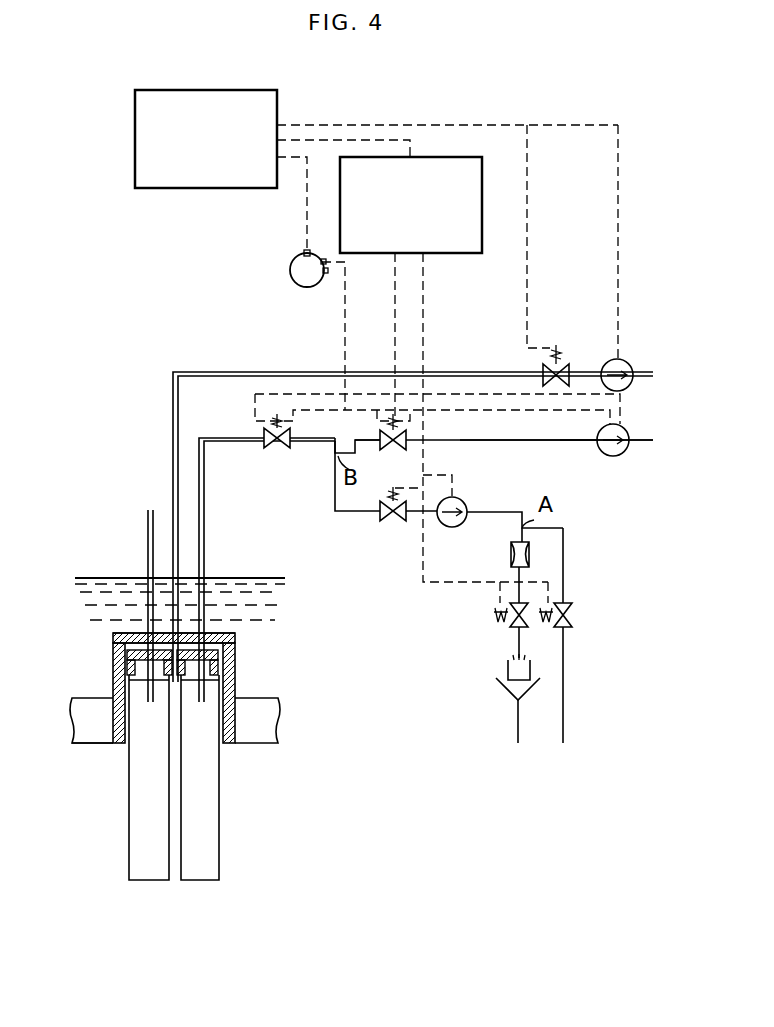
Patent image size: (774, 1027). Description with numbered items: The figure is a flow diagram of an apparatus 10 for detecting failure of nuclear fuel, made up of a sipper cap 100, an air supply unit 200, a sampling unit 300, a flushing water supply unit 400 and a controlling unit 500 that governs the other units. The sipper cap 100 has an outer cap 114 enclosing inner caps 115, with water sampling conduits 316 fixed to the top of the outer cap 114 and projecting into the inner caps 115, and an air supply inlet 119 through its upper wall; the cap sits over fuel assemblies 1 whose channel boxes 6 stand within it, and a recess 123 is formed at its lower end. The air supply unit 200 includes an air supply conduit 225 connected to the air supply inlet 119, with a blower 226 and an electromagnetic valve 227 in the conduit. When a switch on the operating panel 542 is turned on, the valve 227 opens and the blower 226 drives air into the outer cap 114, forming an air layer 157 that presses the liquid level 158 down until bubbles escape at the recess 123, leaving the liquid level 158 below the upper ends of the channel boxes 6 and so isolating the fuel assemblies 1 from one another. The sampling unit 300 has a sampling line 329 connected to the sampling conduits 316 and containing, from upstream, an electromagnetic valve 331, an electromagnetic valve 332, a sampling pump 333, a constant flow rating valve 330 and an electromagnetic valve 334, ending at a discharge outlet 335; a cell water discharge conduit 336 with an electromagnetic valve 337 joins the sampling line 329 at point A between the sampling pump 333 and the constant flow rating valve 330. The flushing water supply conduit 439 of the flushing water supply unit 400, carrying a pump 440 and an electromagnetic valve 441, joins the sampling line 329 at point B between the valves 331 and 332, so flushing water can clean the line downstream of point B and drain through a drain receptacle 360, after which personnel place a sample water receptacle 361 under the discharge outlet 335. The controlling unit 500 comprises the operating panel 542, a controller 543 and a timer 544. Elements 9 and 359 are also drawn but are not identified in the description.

The controlling unit 500 is at (344, 89).
The operating panel 542 is at (135, 152).
The controller 543 is at (500, 155).
The timer 544 is at (290, 270).
The apparatus for detecting failure of nuclear fuel 10 is at (70, 242).
The air supply unit 200 is at (198, 372).
The electromagnetic valve 227 is at (556, 345).
The blower 226 is at (633, 365).
The electromagnetic valve 331 is at (275, 448).
The electromagnetic valve 441 is at (393, 446).
The flushing water supply unit 400 is at (568, 469).
The flushing water supply conduit 439 is at (587, 442).
The pump 440 is at (625, 452).
The air supply conduit 225 is at (173, 491).
The sampling line 329 is at (204, 545).
The sampling unit 300 is at (351, 543).
The electromagnetic valve 332 is at (395, 522).
The sampling pump 333 is at (465, 527).
The constant flow rating valve 330 is at (512, 552).
The cell water discharge conduit 336 is at (563, 556).
The electromagnetic valve 334 is at (485, 617).
The electromagnetic valve 337 is at (575, 620).
The discharge outlet 335 is at (508, 652).
The sample water receptacle 361 is at (500, 672).
The drain receptacle 360 is at (518, 728).
The drain line 359 is at (563, 727).
The sipper cap 100 is at (234, 642).
The outer cap 114 is at (120, 633).
The air layer 157 is at (135, 650).
The inner caps 115 is at (138, 668).
The recess 123 is at (118, 702).
The air supply inlet 119 is at (172, 645).
The water sampling conduits 316 is at (205, 668).
The liquid level 158 is at (212, 686).
The support 9 is at (98, 745).
The channel boxes 6 is at (219, 766).
The fuel assemblies 1 is at (205, 820).